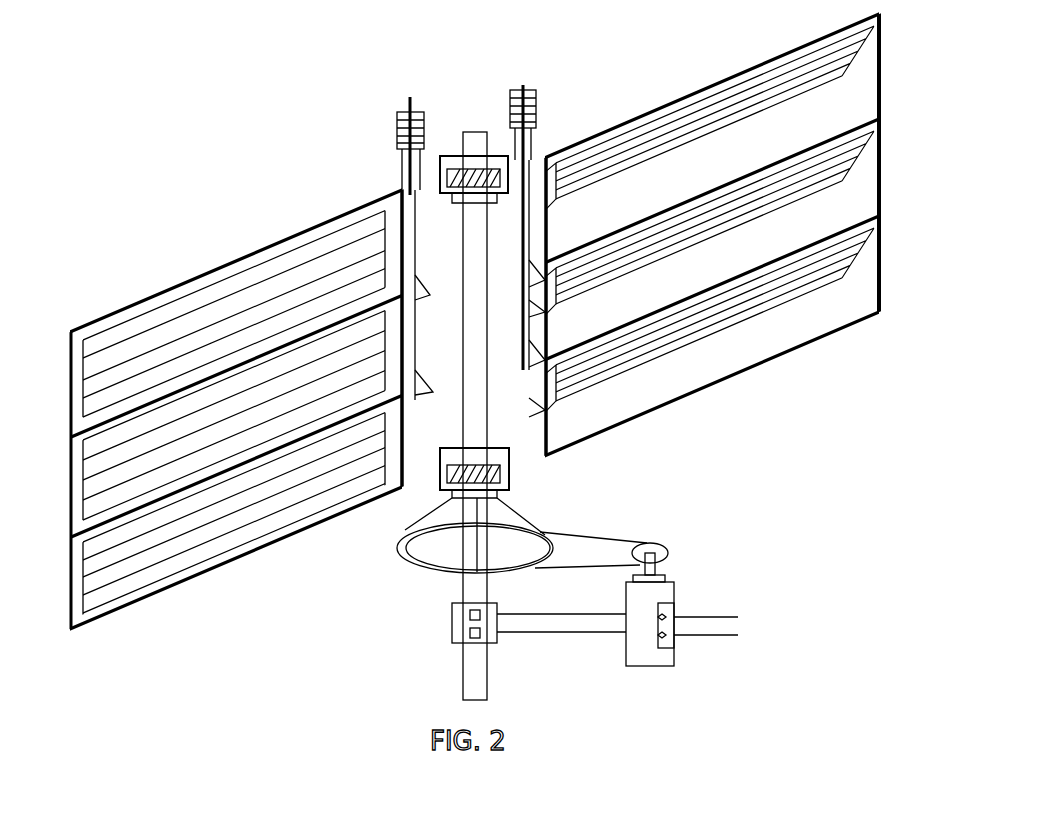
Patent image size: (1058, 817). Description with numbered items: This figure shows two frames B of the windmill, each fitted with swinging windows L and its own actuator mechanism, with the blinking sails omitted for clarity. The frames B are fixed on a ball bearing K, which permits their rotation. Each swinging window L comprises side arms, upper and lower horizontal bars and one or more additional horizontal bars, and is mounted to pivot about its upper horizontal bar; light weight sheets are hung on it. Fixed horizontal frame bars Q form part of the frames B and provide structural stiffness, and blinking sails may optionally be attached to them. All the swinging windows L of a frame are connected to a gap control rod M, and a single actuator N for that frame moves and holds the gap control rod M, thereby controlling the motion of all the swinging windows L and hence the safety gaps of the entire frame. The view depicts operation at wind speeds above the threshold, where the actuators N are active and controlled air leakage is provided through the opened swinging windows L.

The frame of windmill B is at (868, 324).
The swinging window L is at (102, 568).
The horizontal frame bar Q is at (737, 274).
The actuator which controls the gap N is at (392, 133).
The gap control rod M is at (534, 340).
The ball bearing on which the frames are fixed K is at (510, 484).